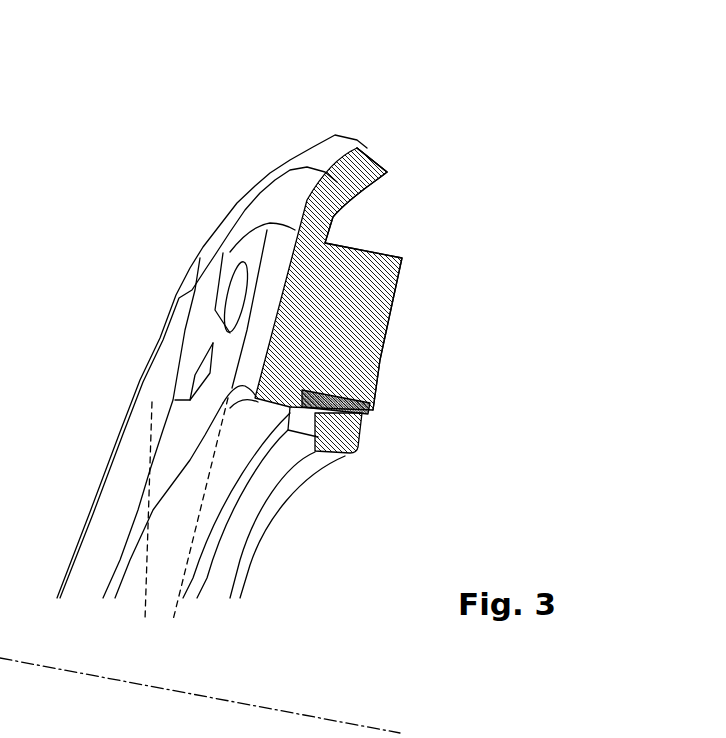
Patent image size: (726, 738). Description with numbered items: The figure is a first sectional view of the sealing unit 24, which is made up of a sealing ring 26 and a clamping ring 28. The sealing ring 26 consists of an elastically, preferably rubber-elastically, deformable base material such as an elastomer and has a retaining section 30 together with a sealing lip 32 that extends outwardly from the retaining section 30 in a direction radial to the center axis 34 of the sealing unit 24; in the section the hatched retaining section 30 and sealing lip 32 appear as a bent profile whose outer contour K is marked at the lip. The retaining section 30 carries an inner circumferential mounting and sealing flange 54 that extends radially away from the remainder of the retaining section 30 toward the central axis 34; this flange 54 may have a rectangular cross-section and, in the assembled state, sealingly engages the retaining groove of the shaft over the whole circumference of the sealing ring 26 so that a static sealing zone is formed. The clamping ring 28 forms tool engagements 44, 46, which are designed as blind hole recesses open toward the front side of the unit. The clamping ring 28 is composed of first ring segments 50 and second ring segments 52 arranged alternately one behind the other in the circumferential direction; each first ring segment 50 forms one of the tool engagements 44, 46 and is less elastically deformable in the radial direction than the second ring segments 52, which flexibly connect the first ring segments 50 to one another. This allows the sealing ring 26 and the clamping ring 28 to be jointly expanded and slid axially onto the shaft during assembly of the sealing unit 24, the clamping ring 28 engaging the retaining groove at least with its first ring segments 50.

The sealing unit 24 is at (504, 76).
The contour K is at (387, 172).
The sealing ring 26 is at (384, 279).
The clamping ring 28 is at (222, 333).
The retaining section 30 is at (335, 333).
The sealing lip 32 is at (335, 200).
The center axis 34 is at (272, 707).
The tool engagement 44 is at (225, 300).
The tool engagement 46 is at (165, 402).
The first ring segment 50 is at (159, 638).
The second ring segment 52 is at (370, 402).
The mounting and sealing flange 54 is at (362, 438).